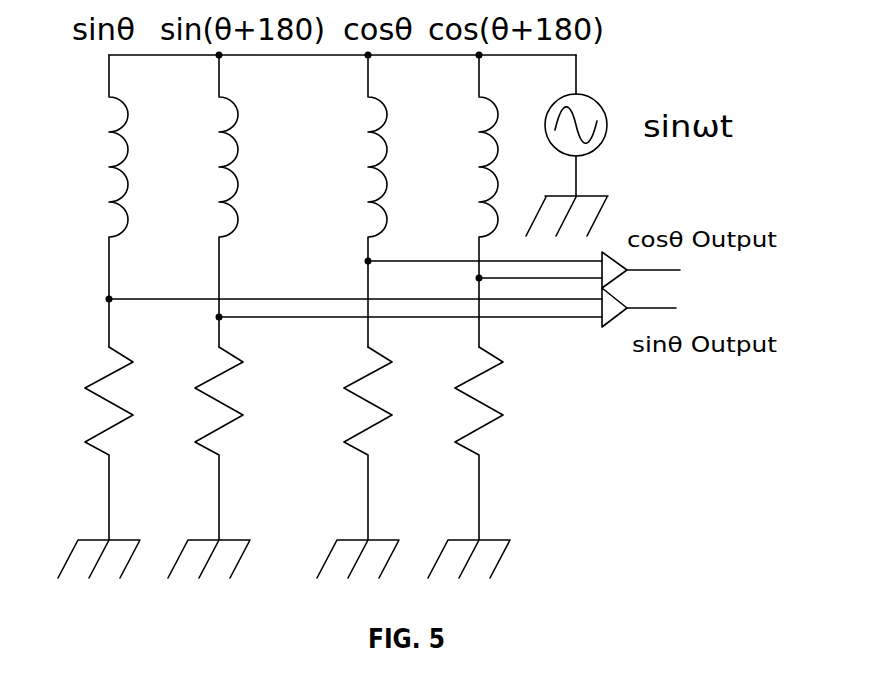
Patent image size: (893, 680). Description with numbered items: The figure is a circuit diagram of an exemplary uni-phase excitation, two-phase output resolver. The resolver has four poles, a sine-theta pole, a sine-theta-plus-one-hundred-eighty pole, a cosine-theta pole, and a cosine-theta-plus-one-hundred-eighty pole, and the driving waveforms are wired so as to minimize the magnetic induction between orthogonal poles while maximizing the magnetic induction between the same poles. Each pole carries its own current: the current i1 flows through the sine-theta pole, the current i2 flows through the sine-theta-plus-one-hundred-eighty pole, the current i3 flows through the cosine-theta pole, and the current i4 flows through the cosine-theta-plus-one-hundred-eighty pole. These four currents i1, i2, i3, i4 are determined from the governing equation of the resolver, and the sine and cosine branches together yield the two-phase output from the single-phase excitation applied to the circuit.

The current through the Sin θ pole i1 is at (97, 201).
The current through the Sin (θ+180) pole i2 is at (207, 201).
The current through the Cos θ pole i3 is at (356, 201).
The current through the Cos (θ+180) pole i4 is at (466, 201).